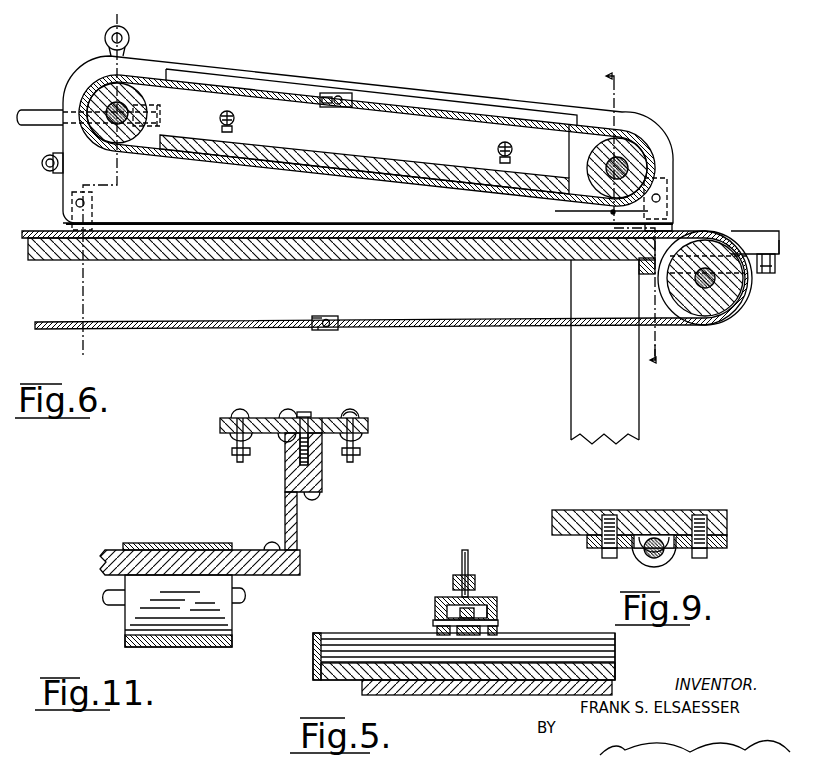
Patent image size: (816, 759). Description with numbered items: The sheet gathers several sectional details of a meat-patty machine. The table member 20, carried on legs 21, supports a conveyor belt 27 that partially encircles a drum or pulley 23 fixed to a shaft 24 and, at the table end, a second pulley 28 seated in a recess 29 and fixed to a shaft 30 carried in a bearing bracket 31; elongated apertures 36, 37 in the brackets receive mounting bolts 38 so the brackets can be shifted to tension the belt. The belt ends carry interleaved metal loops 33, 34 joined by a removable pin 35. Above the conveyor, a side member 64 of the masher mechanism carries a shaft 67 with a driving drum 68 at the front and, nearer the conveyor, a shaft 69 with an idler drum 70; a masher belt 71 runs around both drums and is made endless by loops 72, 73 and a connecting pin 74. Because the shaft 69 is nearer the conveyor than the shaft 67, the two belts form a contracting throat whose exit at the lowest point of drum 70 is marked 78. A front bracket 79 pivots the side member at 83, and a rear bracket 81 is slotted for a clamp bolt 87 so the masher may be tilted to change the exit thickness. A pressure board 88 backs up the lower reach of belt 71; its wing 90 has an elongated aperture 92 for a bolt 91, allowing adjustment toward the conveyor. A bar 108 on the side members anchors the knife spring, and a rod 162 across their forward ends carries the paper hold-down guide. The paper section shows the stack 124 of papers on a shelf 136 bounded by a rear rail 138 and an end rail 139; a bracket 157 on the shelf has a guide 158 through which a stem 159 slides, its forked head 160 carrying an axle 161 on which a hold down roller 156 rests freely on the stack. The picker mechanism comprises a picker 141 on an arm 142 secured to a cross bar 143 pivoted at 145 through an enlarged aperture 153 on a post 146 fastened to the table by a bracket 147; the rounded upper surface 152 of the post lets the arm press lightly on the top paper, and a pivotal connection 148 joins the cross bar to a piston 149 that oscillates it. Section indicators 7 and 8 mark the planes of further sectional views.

In FIG. 6, the section line 7- 7 is at (100, 186).
In FIG. 6, the section line 8- 8 is at (638, 219).
In FIG. 6, the table member 20 is at (467, 260).
In FIG. 11, the table member 20 is at (300, 561).
In FIG. 9, the table member 20 is at (660, 510).
In FIG. 6, the legs 21 is at (640, 416).
In FIG. 11, the drum or pulley 23 is at (224, 621).
In FIG. 11, the shaft 24 is at (115, 607).
In FIG. 6, the conveyor belt 27 is at (192, 233).
In FIG. 11, the conveyor belt 27 is at (150, 543).
In FIG. 6, the second drum or pulley 28 is at (740, 308).
In FIG. 6, the recess 29 is at (752, 232).
In FIG. 6, the shaft 30 is at (745, 292).
In FIG. 9, the shaft 30 is at (648, 556).
In FIG. 6, the bearing bracket 31 is at (779, 252).
In FIG. 9, the bearing bracket 31 is at (670, 566).
In FIG. 6, the metal loop 33 is at (333, 318).
In FIG. 6, the metal loop 34 is at (318, 318).
In FIG. 6, the pin 35 is at (320, 330).
In FIG. 9, the elongated aperture 36 is at (601, 549).
In FIG. 9, the elongated aperture 37 is at (728, 543).
In FIG. 6, the mounting bolts 38 is at (768, 269).
In FIG. 9, the mounting bolts 38 is at (700, 559).
In FIG. 6, the side member 64 is at (483, 98).
In FIG. 6, the shaft 67 is at (111, 134).
In FIG. 6, the drum or pulley 68 is at (140, 104).
In FIG. 6, the shaft 69 is at (626, 171).
In FIG. 6, the drum or pulley 70 is at (650, 168).
In FIG. 6, the belt 71 is at (475, 117).
In FIG. 6, the metal loop 72 is at (328, 93).
In FIG. 6, the metal loop 73 is at (345, 97).
In FIG. 6, the connecting pin 74 is at (340, 108).
In FIG. 6, the exit throat 78 is at (560, 211).
In FIG. 6, the bracket 79 is at (112, 226).
In FIG. 6, the bracket 81 is at (670, 224).
In FIG. 6, the pivotal connection 83 is at (75, 203).
In FIG. 6, the clamp bolt 87 is at (662, 200).
In FIG. 6, the pressure board 88 is at (410, 161).
In FIG. 6, the wing 90 is at (525, 109).
In FIG. 6, the bolts 91 is at (235, 116).
In FIG. 6, the elongated apertures 92 is at (233, 130).
In FIG. 6, the bar 108 is at (130, 38).
In FIG. 5, the stack 124 is at (369, 647).
In FIG. 5, the shelf 136 is at (487, 698).
In FIG. 5, the rail 138 is at (581, 640).
In FIG. 5, the second rail 139 is at (303, 645).
In FIG. 11, the picker 141 is at (295, 417).
In FIG. 11, the arm 142 is at (233, 444).
In FIG. 11, the cross bar 143 is at (322, 418).
In FIG. 11, the pivot 145 is at (303, 412).
In FIG. 11, the post 146 is at (320, 480).
In FIG. 11, the bracket 147 is at (298, 531).
In FIG. 11, the pivotal connection 148 is at (358, 418).
In FIG. 6, the piston 149 is at (47, 100).
In FIG. 11, the piston 149 is at (370, 441).
In FIG. 11, the rounded upper surface 152 is at (283, 441).
In FIG. 11, the enlarged aperture 153 is at (323, 404).
In FIG. 5, the hold down roller 156 is at (497, 615).
In FIG. 5, the bracket 157 is at (490, 606).
In FIG. 5, the guide 158 is at (478, 582).
In FIG. 5, the stem 159 is at (467, 553).
In FIG. 5, the forked head 160 is at (435, 600).
In FIG. 5, the axle 161 is at (432, 625).
In FIG. 6, the rod 162 is at (52, 172).